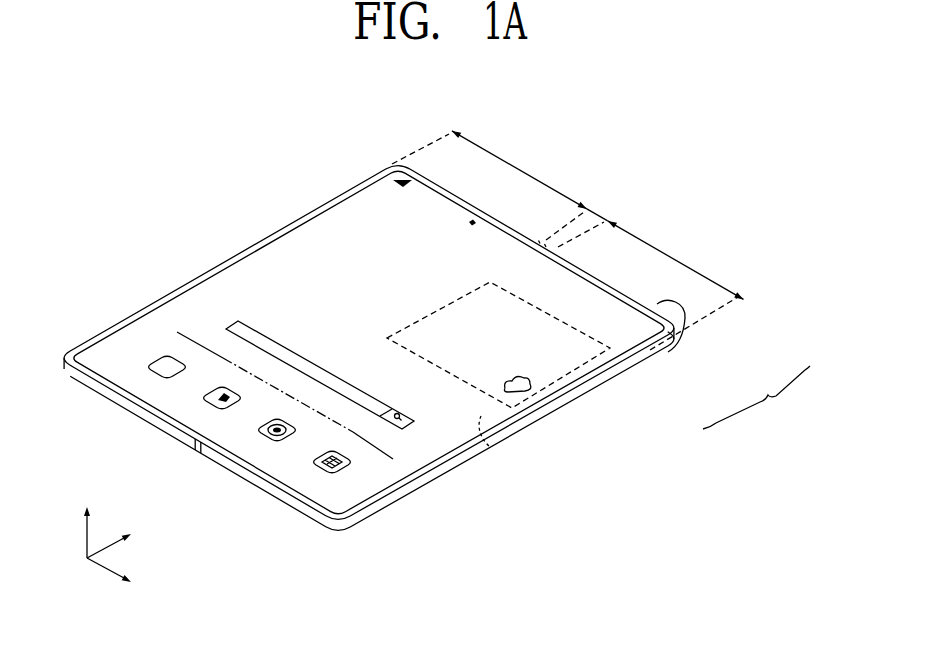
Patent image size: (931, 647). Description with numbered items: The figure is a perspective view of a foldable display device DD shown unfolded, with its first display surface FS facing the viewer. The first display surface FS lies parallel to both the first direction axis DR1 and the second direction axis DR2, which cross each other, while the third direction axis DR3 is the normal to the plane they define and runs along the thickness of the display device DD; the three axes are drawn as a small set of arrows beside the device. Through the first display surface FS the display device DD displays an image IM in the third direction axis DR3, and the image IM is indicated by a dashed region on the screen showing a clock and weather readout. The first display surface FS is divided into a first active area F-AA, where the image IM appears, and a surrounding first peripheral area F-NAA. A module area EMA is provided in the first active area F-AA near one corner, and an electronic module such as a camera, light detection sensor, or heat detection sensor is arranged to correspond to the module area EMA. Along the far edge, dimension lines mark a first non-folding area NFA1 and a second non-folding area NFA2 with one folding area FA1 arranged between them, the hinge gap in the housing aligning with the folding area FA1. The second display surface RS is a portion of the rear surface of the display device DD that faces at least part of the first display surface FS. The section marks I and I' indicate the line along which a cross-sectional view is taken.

The display device DD is at (723, 176).
The first non-folding area NFA1 is at (489, 170).
The folding area FA1 is at (591, 217).
The second non-folding area NFA2 is at (676, 285).
The module area EMA is at (690, 312).
The first peripheral area F-NAA is at (650, 351).
The first active area F-AA is at (623, 367).
The image IM is at (557, 387).
The second display surface RS is at (490, 446).
The first display surface FS is at (756, 401).
The section line I is at (246, 382).
The section line I' is at (373, 463).
The first direction axis DR1 is at (129, 578).
The second direction axis DR2 is at (129, 538).
The third direction axis DR3 is at (85, 518).